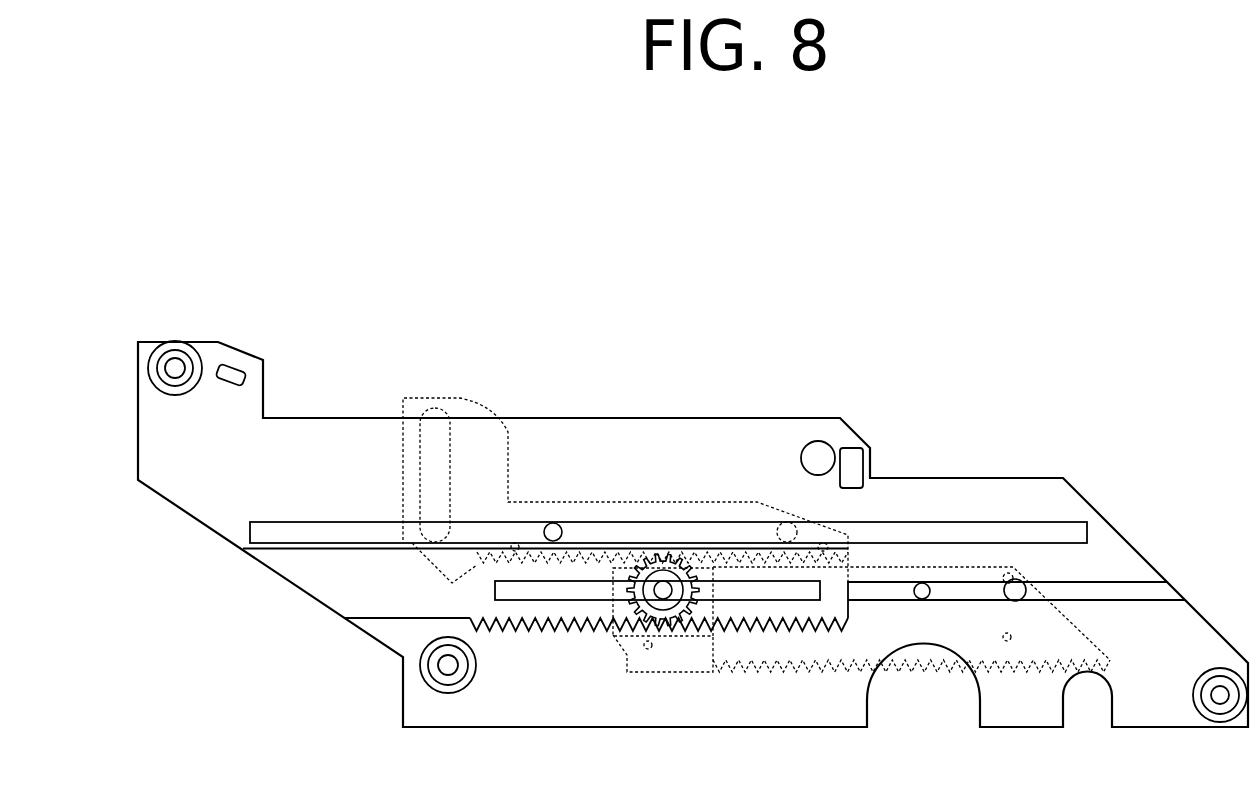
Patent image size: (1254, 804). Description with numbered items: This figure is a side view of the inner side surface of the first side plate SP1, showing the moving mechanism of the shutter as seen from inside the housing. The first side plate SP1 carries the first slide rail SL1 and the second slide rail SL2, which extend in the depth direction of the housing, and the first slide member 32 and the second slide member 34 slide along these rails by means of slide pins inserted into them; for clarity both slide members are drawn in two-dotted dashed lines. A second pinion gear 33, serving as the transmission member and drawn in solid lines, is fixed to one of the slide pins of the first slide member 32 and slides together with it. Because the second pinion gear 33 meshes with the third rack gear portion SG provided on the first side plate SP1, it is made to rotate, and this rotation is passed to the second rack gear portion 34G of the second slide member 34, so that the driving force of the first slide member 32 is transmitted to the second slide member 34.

The first side plate SP1 is at (333, 417).
The first slide member 32 is at (947, 567).
The second pinion gear 33 is at (698, 562).
The second slide member 34 is at (513, 458).
The second rack gear portion 34G is at (515, 548).
The third rack gear portion SG is at (583, 613).
The first slide rail SL1 is at (563, 602).
The second slide rail SL2 is at (327, 522).